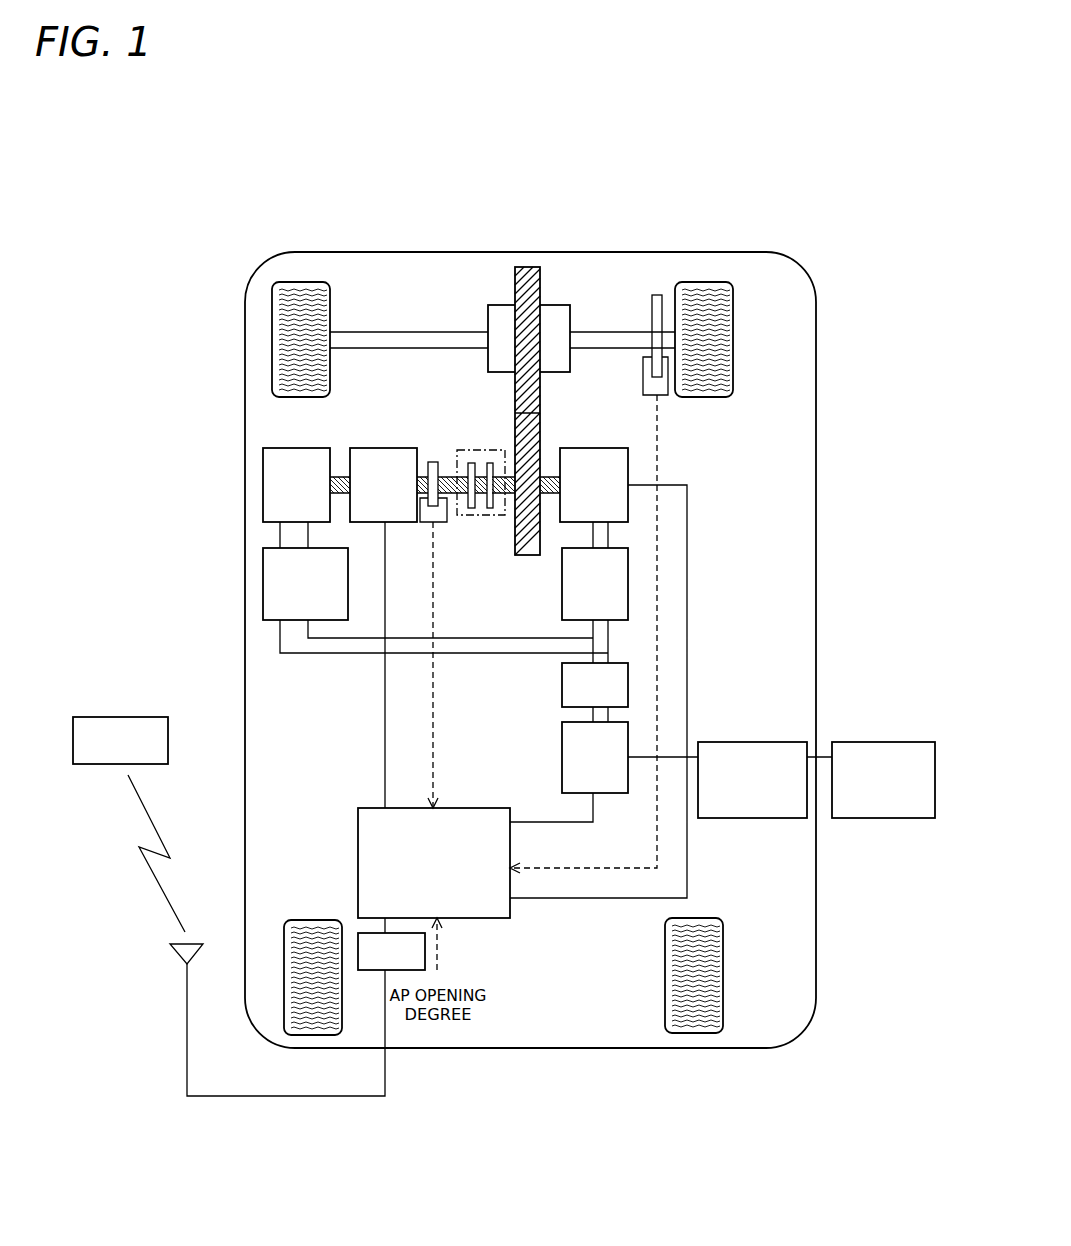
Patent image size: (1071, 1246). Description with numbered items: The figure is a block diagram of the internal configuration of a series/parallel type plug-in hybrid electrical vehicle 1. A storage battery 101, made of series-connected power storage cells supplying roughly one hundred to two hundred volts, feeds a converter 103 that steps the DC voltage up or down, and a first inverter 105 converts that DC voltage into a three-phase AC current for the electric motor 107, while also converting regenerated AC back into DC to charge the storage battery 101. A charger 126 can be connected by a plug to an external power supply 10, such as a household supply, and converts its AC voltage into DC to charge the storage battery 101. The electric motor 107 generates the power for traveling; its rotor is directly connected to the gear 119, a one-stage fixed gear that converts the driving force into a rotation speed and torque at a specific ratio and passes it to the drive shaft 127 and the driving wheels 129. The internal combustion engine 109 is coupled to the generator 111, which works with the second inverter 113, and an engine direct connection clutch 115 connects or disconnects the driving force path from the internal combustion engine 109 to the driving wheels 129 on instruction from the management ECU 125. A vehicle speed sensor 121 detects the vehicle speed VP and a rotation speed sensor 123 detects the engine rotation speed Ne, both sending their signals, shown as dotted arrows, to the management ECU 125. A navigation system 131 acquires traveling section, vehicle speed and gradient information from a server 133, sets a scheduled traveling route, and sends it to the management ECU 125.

The series/parallel type plug-in hybrid electrical vehicle 1 is at (721, 176).
The external power supply 10 is at (878, 818).
The storage battery 101 is at (628, 730).
The converter 103 is at (628, 678).
The first inverter 105 is at (628, 578).
The electric motor 107 is at (628, 455).
The internal combustion engine 109 is at (372, 448).
The generator 111 is at (263, 487).
The second inverter 113 is at (263, 578).
The engine direct connection clutch 115 is at (482, 450).
The gearbox 119 is at (488, 318).
The vehicle speed sensor 121 is at (643, 385).
The rotation speed sensor 123 is at (432, 462).
The management ECU 125 is at (358, 848).
The charger 126 is at (720, 818).
The drive shaft 127 is at (382, 332).
The driving wheels 129 is at (272, 345).
The navigation system 131 is at (372, 970).
The server 133 is at (118, 717).